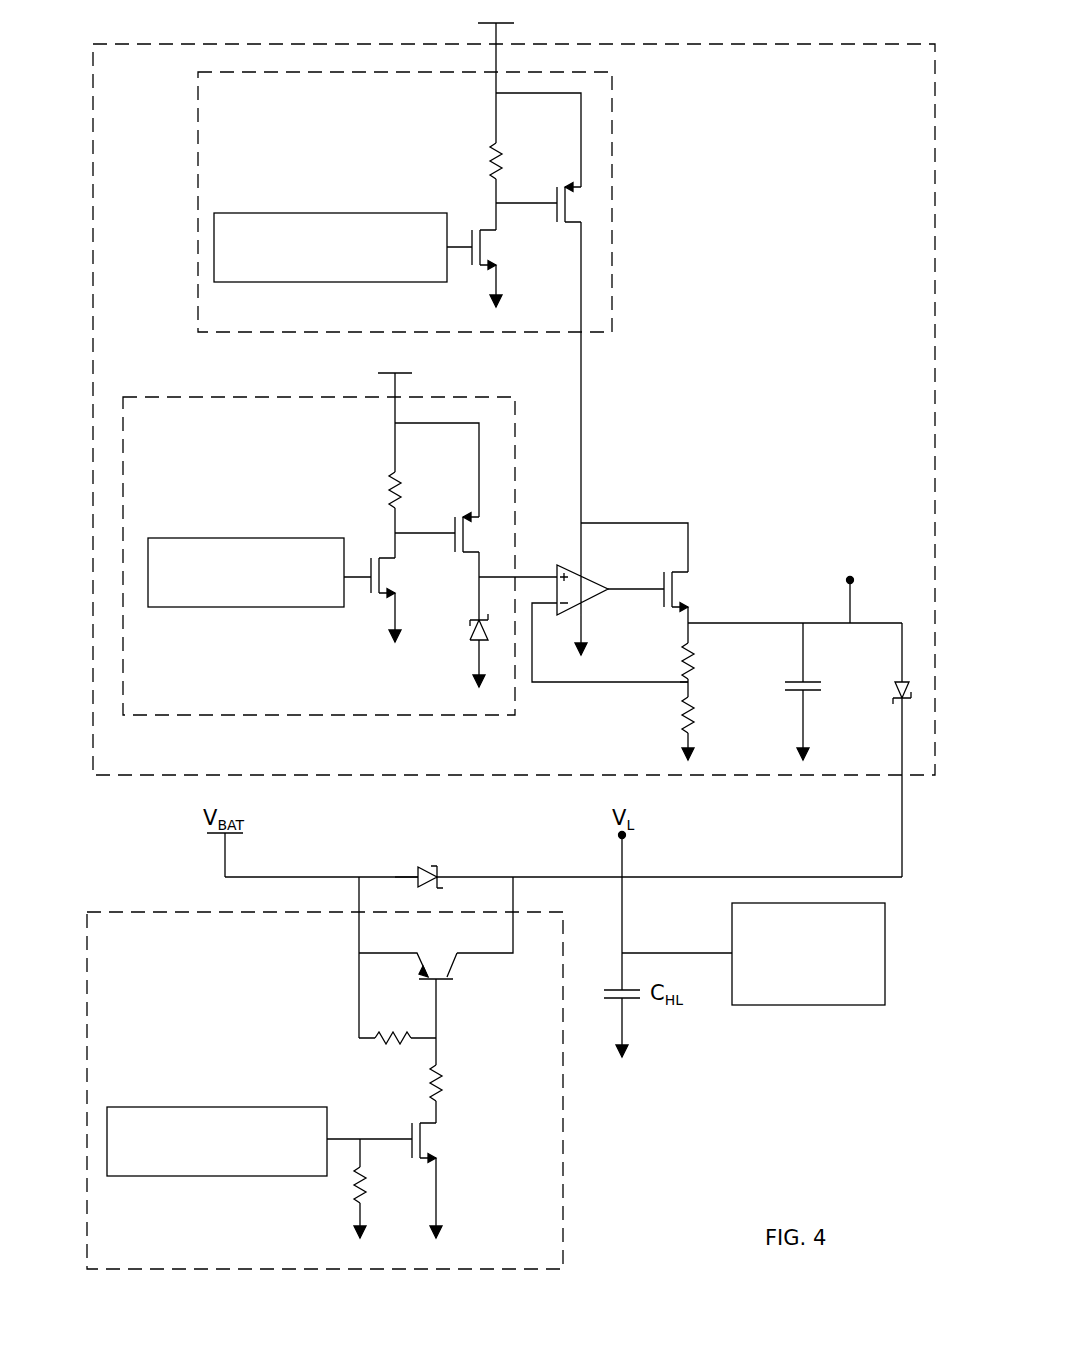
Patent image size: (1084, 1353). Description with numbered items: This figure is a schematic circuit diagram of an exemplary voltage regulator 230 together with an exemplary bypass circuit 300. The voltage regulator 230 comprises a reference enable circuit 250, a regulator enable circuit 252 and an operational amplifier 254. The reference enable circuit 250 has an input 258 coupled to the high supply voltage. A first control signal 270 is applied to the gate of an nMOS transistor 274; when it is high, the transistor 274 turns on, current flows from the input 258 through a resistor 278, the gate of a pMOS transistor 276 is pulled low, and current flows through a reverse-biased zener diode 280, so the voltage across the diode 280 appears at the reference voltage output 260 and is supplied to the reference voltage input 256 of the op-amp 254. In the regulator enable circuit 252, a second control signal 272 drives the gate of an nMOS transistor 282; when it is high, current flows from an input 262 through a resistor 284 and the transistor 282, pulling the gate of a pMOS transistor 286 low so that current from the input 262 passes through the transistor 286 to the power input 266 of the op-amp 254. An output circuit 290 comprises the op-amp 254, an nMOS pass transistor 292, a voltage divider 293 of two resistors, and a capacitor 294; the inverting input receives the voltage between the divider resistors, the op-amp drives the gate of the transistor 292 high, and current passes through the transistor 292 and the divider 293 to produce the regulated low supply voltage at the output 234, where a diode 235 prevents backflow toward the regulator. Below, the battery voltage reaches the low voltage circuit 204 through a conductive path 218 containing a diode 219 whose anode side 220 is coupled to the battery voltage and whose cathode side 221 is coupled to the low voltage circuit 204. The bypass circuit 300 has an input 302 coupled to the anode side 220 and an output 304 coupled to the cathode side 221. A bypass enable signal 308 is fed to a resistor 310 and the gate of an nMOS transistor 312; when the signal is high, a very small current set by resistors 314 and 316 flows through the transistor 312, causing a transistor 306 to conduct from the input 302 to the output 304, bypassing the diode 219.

The voltage regulator 230 is at (514, 438).
The regulator enable circuit 252 is at (198, 107).
The input 262 is at (490, 90).
The resistor 284 is at (490, 165).
The nMOS transistor 282 is at (466, 265).
The pMOS transistor 286 is at (558, 222).
The second control signal 272 is at (305, 212).
The reference enable circuit 250 is at (183, 396).
The input 258 is at (400, 412).
The resistor 278 is at (390, 490).
The first control signal 270 is at (258, 537).
The nMOS transistor 274 is at (365, 595).
The pMOS transistor 276 is at (452, 548).
The zener diode 280 is at (472, 630).
The reference voltage output 260 is at (499, 577).
The reference voltage input 256 is at (567, 566).
The power input 266 is at (586, 583).
The operational amplifier 254 is at (587, 601).
The nMOS pass transistor 292 is at (661, 607).
The output circuit 290 is at (773, 548).
The voltage divider 293 is at (654, 711).
The capacitor 294 is at (810, 680).
The output 234 is at (863, 622).
The diode 235 is at (890, 692).
The conductive path 218 is at (262, 876).
The anode side 220 is at (405, 876).
The diode 219 is at (423, 866).
The cathode side 221 is at (466, 876).
The low voltage circuit 204 is at (797, 1005).
The bypass circuit 300 is at (143, 911).
The input 302 is at (359, 975).
The output 304 is at (503, 953).
The transistor 306 is at (452, 975).
The resistor 314 is at (386, 1045).
The resistor 316 is at (443, 1078).
The nMOS transistor 312 is at (408, 1132).
The bypass enable signal 308 is at (182, 1106).
The resistor 310 is at (353, 1192).